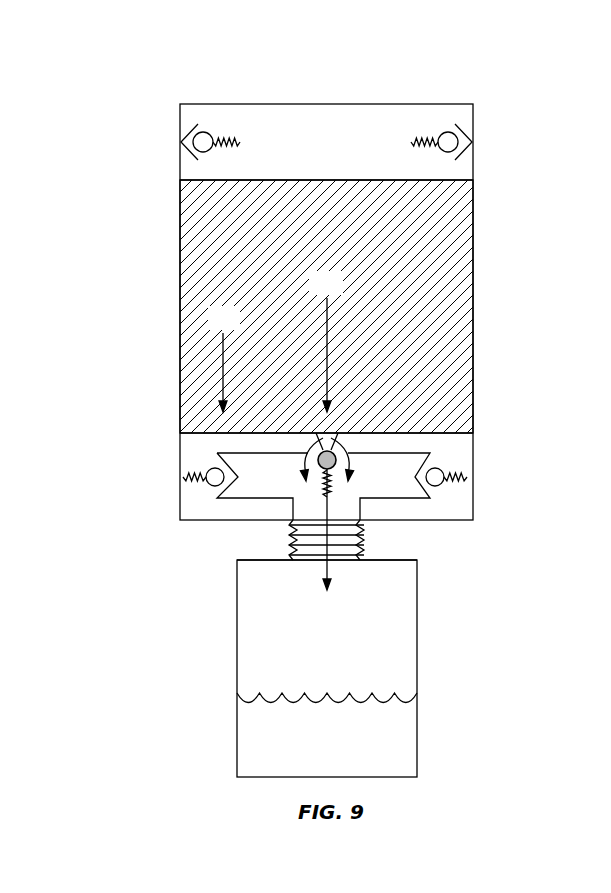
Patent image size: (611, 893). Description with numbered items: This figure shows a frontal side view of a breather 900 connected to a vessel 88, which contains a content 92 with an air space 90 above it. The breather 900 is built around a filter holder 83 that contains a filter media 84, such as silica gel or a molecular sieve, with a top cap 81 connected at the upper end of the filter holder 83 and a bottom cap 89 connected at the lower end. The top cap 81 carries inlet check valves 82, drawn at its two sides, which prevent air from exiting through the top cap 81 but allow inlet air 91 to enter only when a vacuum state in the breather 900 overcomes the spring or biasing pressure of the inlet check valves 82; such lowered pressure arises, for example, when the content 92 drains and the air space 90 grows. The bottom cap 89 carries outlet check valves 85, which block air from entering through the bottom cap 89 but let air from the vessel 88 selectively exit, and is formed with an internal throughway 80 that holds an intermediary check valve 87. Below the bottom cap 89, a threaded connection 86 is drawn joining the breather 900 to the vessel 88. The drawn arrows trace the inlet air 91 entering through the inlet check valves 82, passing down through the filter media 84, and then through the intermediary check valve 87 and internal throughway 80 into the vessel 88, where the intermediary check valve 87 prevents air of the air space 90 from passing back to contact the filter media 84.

The breather 900 is at (505, 82).
The top cap 81 is at (378, 104).
The inlet check valves 82 is at (188, 132).
The filter holder 83 is at (476, 198).
The filter media 84 is at (430, 310).
The outlet check valves 85 is at (192, 470).
The threaded connection 86 is at (373, 550).
The intermediary check valve 87 is at (330, 436).
The vessel 88 is at (418, 622).
The bottom cap 89 is at (474, 505).
The air space 90 is at (242, 572).
The inlet air 91 is at (236, 259).
The content 92 is at (405, 703).
The internal throughway 80 is at (337, 457).